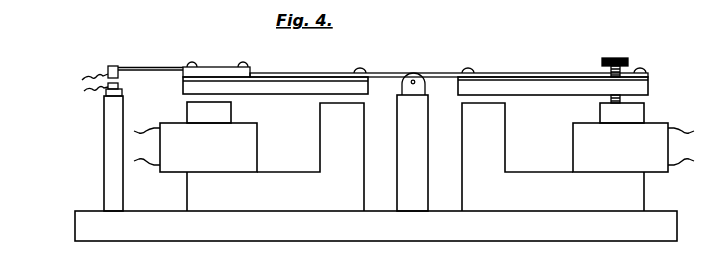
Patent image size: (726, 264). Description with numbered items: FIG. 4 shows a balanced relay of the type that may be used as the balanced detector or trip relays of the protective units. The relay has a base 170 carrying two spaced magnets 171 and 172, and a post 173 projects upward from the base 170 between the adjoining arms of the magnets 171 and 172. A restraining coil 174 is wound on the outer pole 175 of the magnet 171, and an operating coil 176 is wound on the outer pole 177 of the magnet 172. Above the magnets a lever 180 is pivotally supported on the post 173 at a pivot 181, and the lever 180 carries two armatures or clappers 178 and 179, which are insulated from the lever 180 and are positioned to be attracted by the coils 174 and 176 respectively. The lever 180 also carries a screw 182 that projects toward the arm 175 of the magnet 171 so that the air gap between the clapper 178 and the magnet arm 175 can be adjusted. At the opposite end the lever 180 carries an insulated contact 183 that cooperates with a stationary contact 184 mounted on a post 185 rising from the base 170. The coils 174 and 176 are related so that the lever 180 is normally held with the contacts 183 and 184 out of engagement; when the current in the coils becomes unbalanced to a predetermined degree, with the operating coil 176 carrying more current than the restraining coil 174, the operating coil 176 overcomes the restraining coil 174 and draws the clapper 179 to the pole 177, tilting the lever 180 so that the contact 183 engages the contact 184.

The base 170 is at (376, 226).
The magnet 171 is at (553, 157).
The magnet 172 is at (275, 157).
The post 173 is at (414, 153).
The restraining coil 174 is at (633, 147).
The outer pole 175 is at (633, 113).
The operating coil 176 is at (195, 147).
The outer pole 177 is at (209, 112).
The clapper 178 is at (553, 86).
The clapper 179 is at (275, 86).
The lever 180 is at (387, 73).
The pivot 181 is at (415, 80).
The screw 182 is at (614, 58).
The insulated contact 183 is at (114, 66).
The stationary contact 184 is at (118, 86).
The post 185 is at (104, 152).